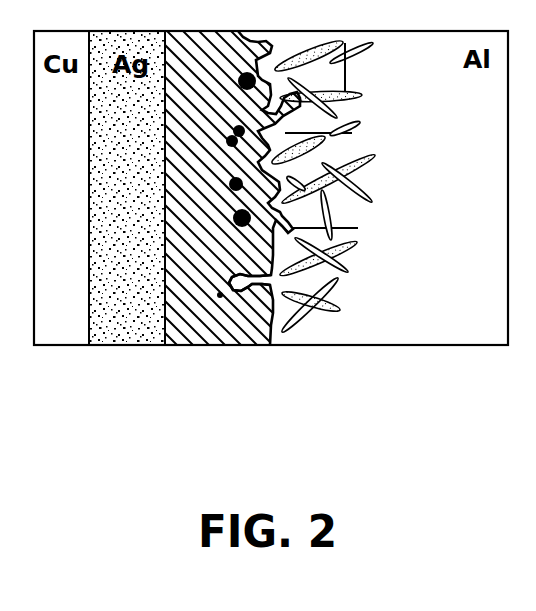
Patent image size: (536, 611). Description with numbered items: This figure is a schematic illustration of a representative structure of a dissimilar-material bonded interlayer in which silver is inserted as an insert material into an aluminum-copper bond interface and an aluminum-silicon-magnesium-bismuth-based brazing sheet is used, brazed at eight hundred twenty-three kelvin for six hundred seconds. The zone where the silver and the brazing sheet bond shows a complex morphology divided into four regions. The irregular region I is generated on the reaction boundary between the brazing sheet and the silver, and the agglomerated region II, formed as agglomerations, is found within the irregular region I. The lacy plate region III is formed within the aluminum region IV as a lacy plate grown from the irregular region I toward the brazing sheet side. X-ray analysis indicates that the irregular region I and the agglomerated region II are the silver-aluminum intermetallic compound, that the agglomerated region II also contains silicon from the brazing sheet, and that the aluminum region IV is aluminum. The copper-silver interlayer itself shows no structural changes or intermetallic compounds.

The Region I is at (195, 321).
The Region II is at (234, 308).
The Region III is at (319, 331).
The Region IV is at (365, 311).